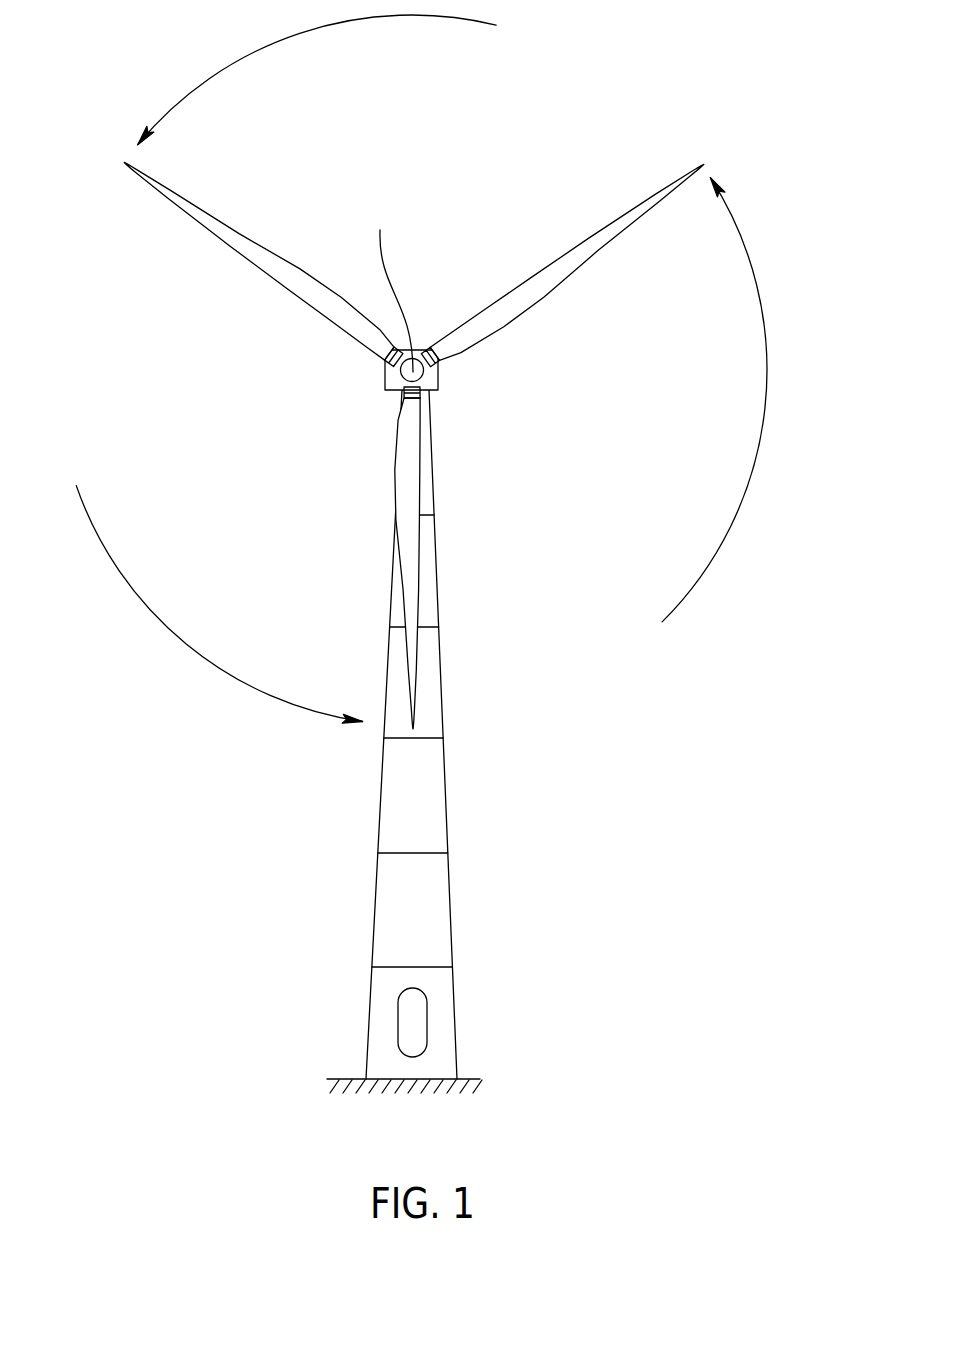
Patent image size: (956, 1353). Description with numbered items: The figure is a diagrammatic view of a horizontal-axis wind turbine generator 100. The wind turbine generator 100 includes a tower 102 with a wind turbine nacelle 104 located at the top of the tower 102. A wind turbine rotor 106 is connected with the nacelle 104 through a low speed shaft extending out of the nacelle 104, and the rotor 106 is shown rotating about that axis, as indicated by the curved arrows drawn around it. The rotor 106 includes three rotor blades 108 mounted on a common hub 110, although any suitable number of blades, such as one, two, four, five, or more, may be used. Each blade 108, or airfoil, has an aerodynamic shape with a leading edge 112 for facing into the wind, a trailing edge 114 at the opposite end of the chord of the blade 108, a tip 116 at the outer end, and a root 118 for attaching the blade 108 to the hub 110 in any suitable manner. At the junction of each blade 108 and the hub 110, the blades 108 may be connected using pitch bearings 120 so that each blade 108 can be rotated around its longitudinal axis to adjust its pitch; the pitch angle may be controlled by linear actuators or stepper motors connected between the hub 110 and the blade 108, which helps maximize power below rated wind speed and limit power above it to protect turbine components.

The wind turbine generator 100 is at (362, 918).
The tower 102 is at (437, 808).
The wind turbine nacelle 104 is at (437, 388).
The wind turbine rotor 106 is at (355, 367).
The rotor blade 108 is at (258, 250).
The hub 110 is at (413, 372).
The leading edge 112 is at (590, 237).
The trailing edge 114 is at (583, 263).
The tip 116 is at (708, 158).
The root 118 is at (452, 367).
The pitch bearing 120 is at (434, 350).